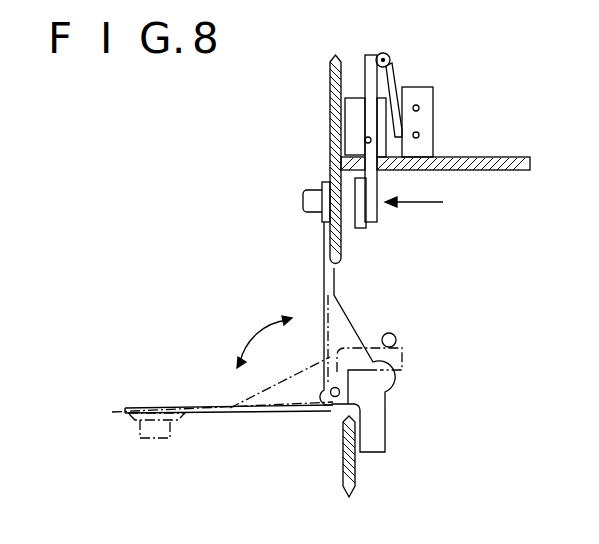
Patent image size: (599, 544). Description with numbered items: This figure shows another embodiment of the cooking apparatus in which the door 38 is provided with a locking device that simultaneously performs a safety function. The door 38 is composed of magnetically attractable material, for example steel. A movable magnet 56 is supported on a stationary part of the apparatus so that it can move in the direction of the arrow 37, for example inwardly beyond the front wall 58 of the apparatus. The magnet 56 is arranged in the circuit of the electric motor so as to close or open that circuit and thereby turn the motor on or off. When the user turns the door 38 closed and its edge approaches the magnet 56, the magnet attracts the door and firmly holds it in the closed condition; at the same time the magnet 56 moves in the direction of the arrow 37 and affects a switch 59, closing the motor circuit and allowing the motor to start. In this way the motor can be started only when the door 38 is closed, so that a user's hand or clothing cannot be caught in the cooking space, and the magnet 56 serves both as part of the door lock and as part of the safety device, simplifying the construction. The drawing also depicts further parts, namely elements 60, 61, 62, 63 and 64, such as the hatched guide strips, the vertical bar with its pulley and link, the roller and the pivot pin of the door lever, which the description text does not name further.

The arrow 37 is at (424, 203).
The door 38 is at (324, 267).
The movable magnet 56 is at (362, 229).
The front wall 58 is at (329, 118).
The switch 59 is at (434, 118).
The fastening bolt 60 is at (319, 214).
The slide bar 61 is at (368, 56).
The link rod 62 is at (370, 138).
The roller 63 is at (396, 336).
The pivot pin 64 is at (333, 398).